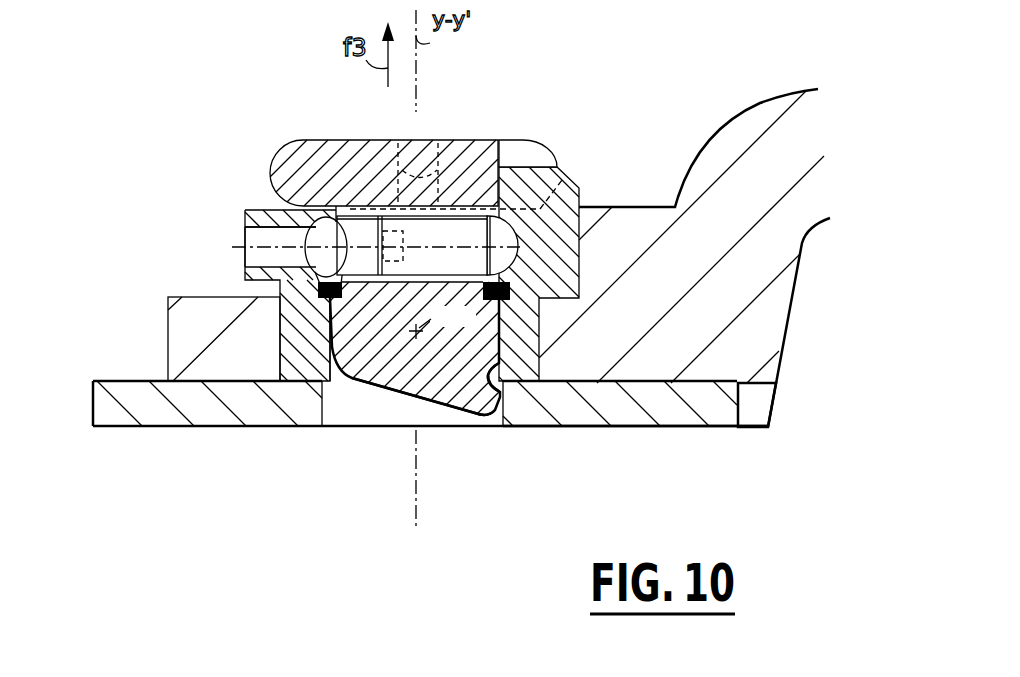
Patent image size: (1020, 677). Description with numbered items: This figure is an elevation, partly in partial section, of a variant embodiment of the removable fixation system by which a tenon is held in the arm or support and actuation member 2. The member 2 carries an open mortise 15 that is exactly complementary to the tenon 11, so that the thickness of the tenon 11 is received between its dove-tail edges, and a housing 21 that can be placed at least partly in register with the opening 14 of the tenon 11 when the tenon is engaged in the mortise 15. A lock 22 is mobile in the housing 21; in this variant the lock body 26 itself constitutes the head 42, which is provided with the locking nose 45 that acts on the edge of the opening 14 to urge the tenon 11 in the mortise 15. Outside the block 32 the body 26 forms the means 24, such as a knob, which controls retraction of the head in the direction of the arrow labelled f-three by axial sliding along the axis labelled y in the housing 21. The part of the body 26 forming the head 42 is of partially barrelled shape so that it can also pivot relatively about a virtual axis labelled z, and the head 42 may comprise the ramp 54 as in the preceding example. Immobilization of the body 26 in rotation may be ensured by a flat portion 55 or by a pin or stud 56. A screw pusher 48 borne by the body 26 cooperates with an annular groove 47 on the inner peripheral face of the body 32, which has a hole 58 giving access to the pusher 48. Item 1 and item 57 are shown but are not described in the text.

The base plate 1 is at (123, 381).
The arm or support and actuation member 2 is at (755, 118).
The tenon 11 is at (700, 428).
The opening 14 is at (322, 408).
The open mortise 15 is at (757, 403).
The housing 21 is at (320, 329).
The lock 22 is at (370, 303).
The means 24 is at (298, 157).
The lock body 26 is at (380, 354).
The block 32 is at (243, 281).
The head 42 is at (410, 372).
The locking nose 45 is at (492, 400).
The annular groove 47 is at (532, 204).
The screw pusher 48 is at (420, 240).
The ramp 54 is at (437, 407).
The flat portion 55 is at (500, 142).
The pin or stud 56 is at (428, 140).
The bore 57 is at (250, 265).
The hole 58 is at (270, 237).